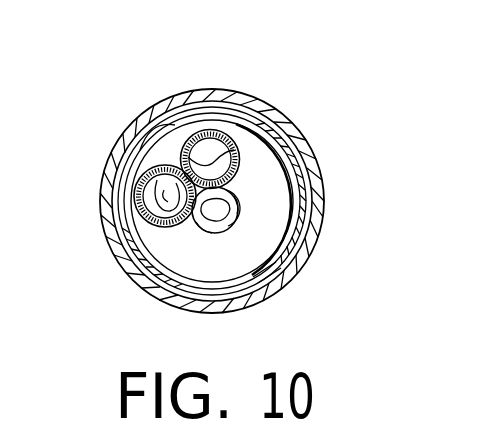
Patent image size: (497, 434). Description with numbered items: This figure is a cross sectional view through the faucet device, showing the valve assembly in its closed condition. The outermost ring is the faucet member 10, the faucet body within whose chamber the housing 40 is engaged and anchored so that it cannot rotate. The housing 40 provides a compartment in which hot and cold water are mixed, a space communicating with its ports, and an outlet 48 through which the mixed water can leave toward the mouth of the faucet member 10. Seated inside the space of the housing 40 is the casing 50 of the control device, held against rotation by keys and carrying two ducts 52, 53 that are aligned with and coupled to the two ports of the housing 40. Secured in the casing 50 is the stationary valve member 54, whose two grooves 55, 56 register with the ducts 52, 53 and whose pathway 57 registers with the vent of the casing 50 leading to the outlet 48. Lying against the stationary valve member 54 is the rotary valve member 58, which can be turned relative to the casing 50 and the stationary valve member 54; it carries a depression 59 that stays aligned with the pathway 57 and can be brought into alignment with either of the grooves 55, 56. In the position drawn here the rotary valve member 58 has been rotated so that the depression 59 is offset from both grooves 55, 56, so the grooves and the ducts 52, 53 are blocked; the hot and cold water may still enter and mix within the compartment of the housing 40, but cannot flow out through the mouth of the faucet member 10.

The faucet member 10 is at (112, 234).
The housing 40 is at (288, 264).
The outlet 48 is at (249, 110).
The casing 50 is at (260, 173).
The duct 52 is at (152, 163).
The duct 53 is at (164, 188).
The stationary valve member 54 is at (238, 212).
The groove 55 is at (210, 153).
The groove 56 is at (148, 191).
The pathway 57 is at (222, 213).
The rotary valve member 58 is at (240, 199).
The depression 59 is at (208, 220).